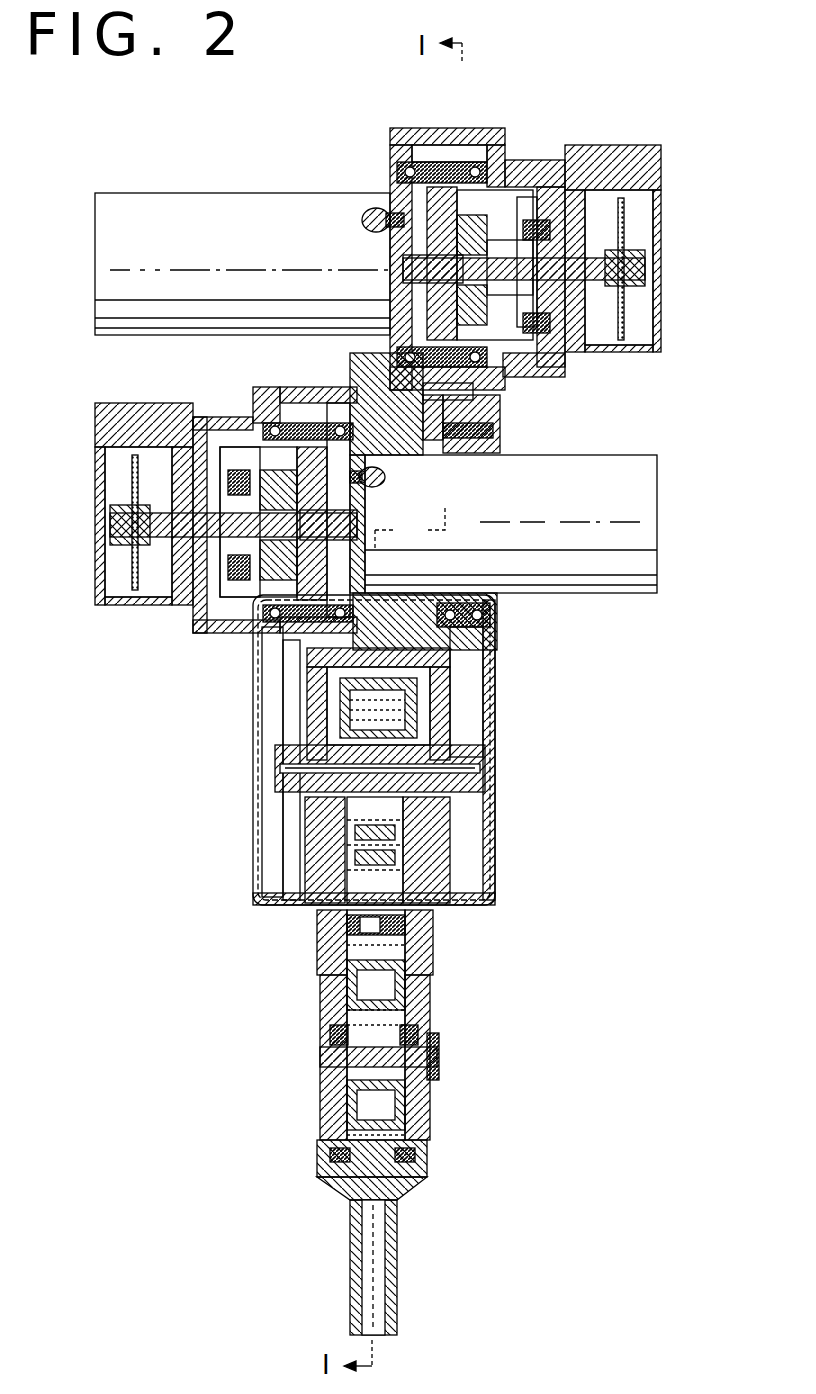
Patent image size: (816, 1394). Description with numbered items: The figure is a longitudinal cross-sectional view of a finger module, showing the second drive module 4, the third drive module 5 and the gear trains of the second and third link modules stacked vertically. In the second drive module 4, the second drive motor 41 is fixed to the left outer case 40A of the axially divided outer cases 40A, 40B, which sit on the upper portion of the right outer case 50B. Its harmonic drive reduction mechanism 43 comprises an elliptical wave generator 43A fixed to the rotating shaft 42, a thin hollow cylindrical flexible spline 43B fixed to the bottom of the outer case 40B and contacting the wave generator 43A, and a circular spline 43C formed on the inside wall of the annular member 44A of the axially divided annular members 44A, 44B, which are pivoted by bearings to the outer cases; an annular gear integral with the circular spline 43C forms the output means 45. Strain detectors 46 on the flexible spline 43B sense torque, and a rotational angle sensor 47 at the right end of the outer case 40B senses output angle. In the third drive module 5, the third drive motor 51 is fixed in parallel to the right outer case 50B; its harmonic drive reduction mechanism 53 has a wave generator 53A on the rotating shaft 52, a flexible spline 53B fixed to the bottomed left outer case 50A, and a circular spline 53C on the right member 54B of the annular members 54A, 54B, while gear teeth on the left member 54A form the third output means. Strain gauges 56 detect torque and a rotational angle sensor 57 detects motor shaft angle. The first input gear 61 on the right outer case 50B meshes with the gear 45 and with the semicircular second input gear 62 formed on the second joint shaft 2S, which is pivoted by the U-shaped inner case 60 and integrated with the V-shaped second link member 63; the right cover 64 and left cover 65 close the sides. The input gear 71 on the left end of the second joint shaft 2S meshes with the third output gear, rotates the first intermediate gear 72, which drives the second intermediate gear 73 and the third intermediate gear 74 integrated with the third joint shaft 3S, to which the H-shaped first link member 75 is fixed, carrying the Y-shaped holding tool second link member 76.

The second drive module 4 is at (241, 229).
The second drive motor 41 is at (210, 215).
The rotating shaft 42 is at (392, 194).
The harmonic drive reduction mechanism 43 is at (517, 216).
The wave generator 43A is at (398, 187).
The flexible spline 43B is at (515, 172).
The circular spline 43C is at (415, 128).
The outer case 40A is at (437, 128).
The outer case 40B is at (495, 140).
The output means 45 is at (505, 168).
The strain detectors 46 is at (620, 180).
The rotational angle sensor 47 is at (636, 318).
The annular member 44A is at (490, 403).
The annular member 44B is at (520, 386).
The left outer case 50A is at (241, 505).
The right outer case 50B is at (410, 430).
The third drive motor 51 is at (635, 498).
The third drive module 5 is at (539, 539).
The rotating shaft 52 is at (235, 445).
The harmonic drive reduction mechanism 53 is at (242, 605).
The wave generator 53A is at (360, 500).
The flexible spline 53B is at (232, 612).
The circular spline 53C is at (303, 397).
The annular member 54A is at (226, 405).
The annular member 54B is at (320, 420).
The strain gauges 56 is at (235, 435).
The rotational angle sensor 57 is at (112, 476).
The inner case 60 is at (373, 750).
The first input gear 61 is at (497, 638).
The second input gear 62 is at (492, 672).
The second link member 63 is at (379, 1122).
The right cover 64 is at (497, 880).
The left cover 65 is at (253, 867).
The input gear 71 is at (288, 712).
The first intermediate gear 72 is at (362, 830).
The second intermediate gear 73 is at (378, 970).
The third intermediate gear 74 is at (322, 1008).
The first link member 75 is at (325, 1072).
The second link member 76 is at (352, 1180).
The second joint shaft 2S is at (490, 790).
The third joint shaft 3S is at (437, 1078).